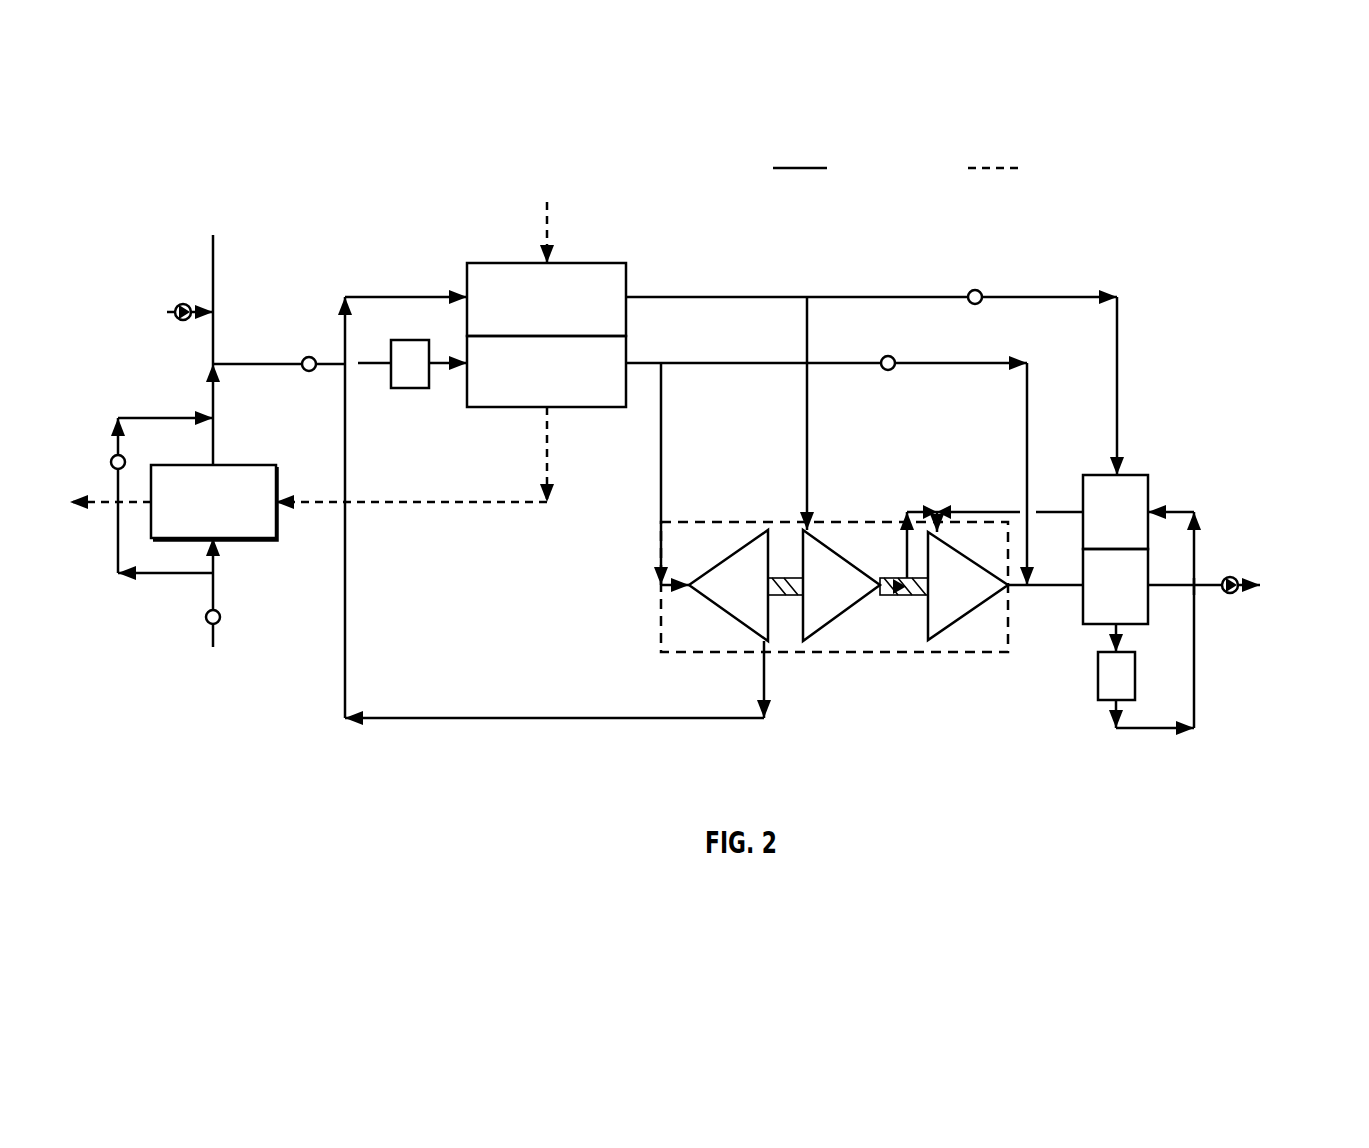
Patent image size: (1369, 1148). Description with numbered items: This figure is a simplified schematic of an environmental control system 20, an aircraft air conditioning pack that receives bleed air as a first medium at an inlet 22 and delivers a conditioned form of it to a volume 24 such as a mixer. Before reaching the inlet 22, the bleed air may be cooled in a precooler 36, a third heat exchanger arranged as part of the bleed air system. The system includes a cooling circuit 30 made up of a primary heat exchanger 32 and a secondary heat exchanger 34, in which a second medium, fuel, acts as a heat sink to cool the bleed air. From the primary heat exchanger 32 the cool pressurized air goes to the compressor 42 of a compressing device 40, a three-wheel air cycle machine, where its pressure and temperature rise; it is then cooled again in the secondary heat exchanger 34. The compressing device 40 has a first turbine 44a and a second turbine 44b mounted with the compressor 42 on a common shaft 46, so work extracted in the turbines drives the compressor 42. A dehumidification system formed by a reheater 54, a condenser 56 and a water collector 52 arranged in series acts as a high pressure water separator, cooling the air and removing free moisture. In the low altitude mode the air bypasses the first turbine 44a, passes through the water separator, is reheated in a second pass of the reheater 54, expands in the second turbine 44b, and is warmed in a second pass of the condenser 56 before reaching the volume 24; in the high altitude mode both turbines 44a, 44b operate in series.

The environmental control system 20 is at (1150, 222).
The inlet 22 is at (223, 363).
The volume 24 is at (1241, 601).
The cooling circuit 30 is at (613, 247).
The primary heat exchanger 32 is at (614, 401).
The secondary heat exchanger 34 is at (614, 329).
The precooler 36 is at (226, 531).
The compressing device 40 is at (880, 522).
The compressor 42 is at (733, 570).
The first turbine 44a is at (813, 610).
The second turbine 44b is at (943, 610).
The shaft 46 is at (913, 600).
The water collector 52 is at (1098, 680).
The reheater 54 is at (1135, 490).
The condenser 56 is at (1093, 600).